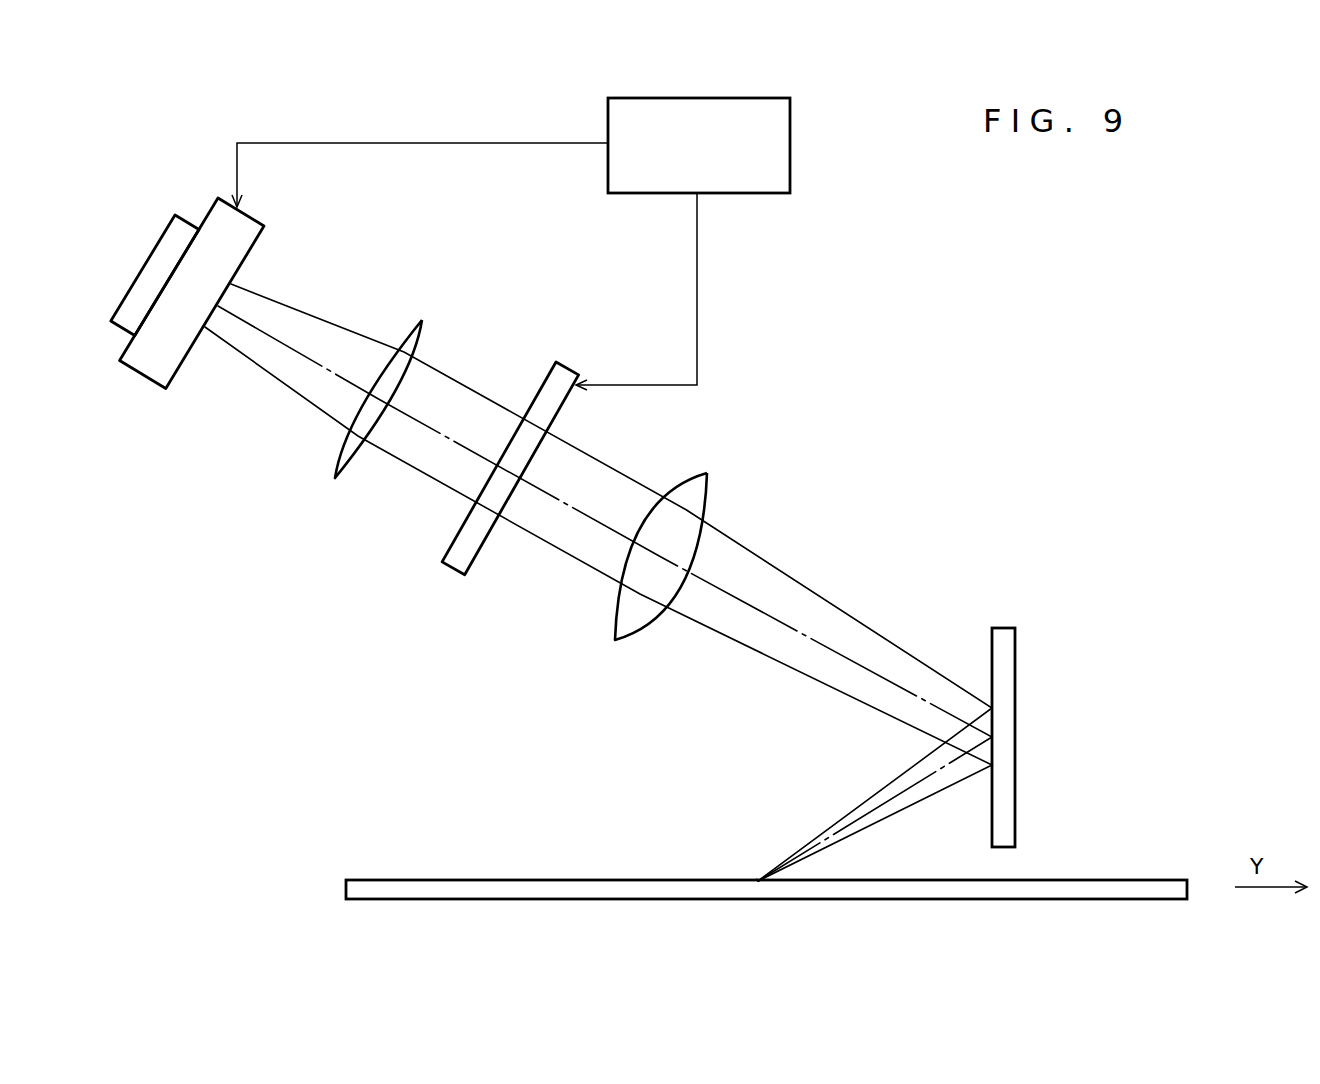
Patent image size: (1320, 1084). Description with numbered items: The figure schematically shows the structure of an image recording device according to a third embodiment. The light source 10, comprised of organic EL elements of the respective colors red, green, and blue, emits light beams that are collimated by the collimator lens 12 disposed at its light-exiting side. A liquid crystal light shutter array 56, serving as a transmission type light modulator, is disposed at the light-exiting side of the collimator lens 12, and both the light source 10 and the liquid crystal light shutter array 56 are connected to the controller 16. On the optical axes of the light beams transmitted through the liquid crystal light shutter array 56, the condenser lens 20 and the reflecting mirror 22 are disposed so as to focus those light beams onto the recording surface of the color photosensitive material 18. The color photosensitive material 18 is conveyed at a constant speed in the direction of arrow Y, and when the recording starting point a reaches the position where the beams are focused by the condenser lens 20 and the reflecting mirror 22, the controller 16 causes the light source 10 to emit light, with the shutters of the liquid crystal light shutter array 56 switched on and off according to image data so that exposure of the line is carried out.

The light source 10 is at (256, 223).
The collimator lens 12 is at (424, 333).
The controller 16 is at (790, 160).
The color photosensitive material 18 is at (511, 890).
The condenser lens 20 is at (706, 492).
The reflecting mirror 22 is at (1016, 672).
The liquid crystal light shutter array 56 is at (566, 370).
The recording starting point a is at (752, 870).